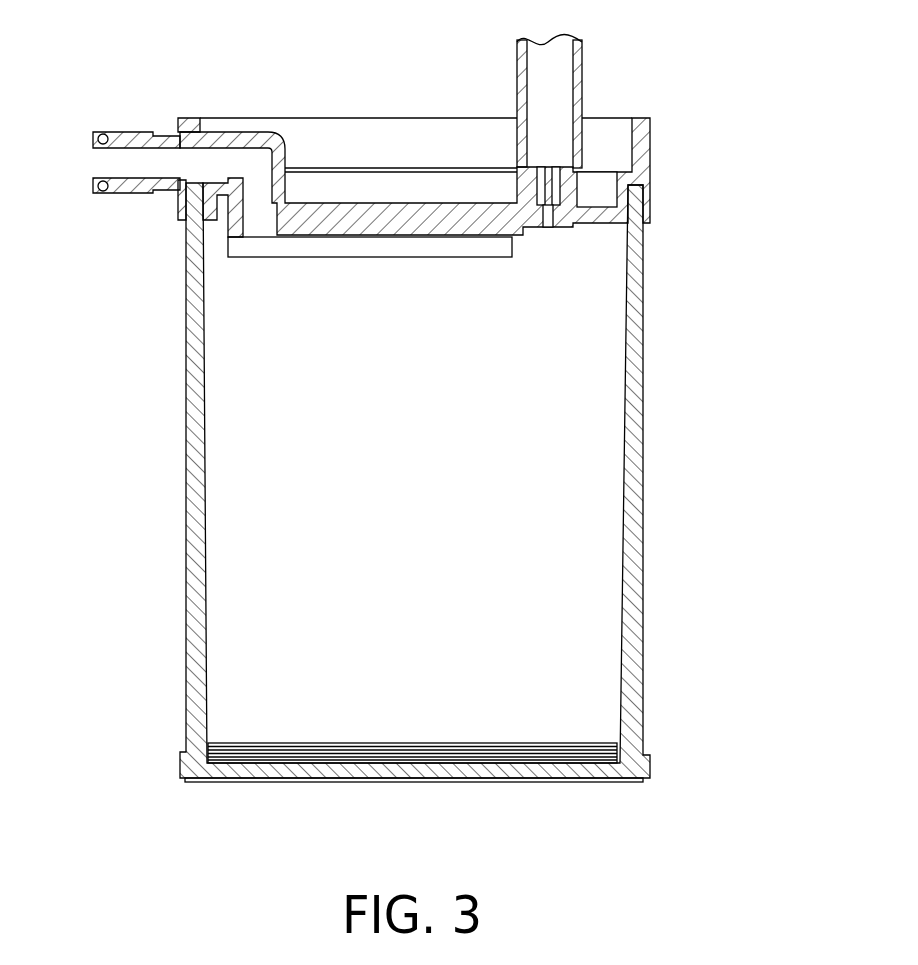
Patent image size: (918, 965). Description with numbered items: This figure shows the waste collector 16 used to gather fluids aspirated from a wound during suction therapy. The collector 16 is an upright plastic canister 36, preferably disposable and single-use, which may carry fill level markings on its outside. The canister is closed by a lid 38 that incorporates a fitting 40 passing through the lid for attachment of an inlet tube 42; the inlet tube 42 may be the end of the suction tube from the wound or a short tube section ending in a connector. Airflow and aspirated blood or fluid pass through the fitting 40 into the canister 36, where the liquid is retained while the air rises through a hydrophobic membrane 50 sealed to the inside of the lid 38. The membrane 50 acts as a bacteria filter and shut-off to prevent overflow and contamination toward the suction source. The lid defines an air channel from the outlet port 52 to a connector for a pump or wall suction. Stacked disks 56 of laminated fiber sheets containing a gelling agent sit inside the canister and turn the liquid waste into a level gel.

The waste collector 16 is at (437, 395).
The canister 36 is at (636, 400).
The lid 38 is at (236, 112).
The fitting 40 is at (572, 187).
The inlet tube 42 is at (585, 85).
The hydrophobic membrane 50 is at (300, 248).
The outlet port 52 is at (190, 163).
The disks 56 is at (551, 735).